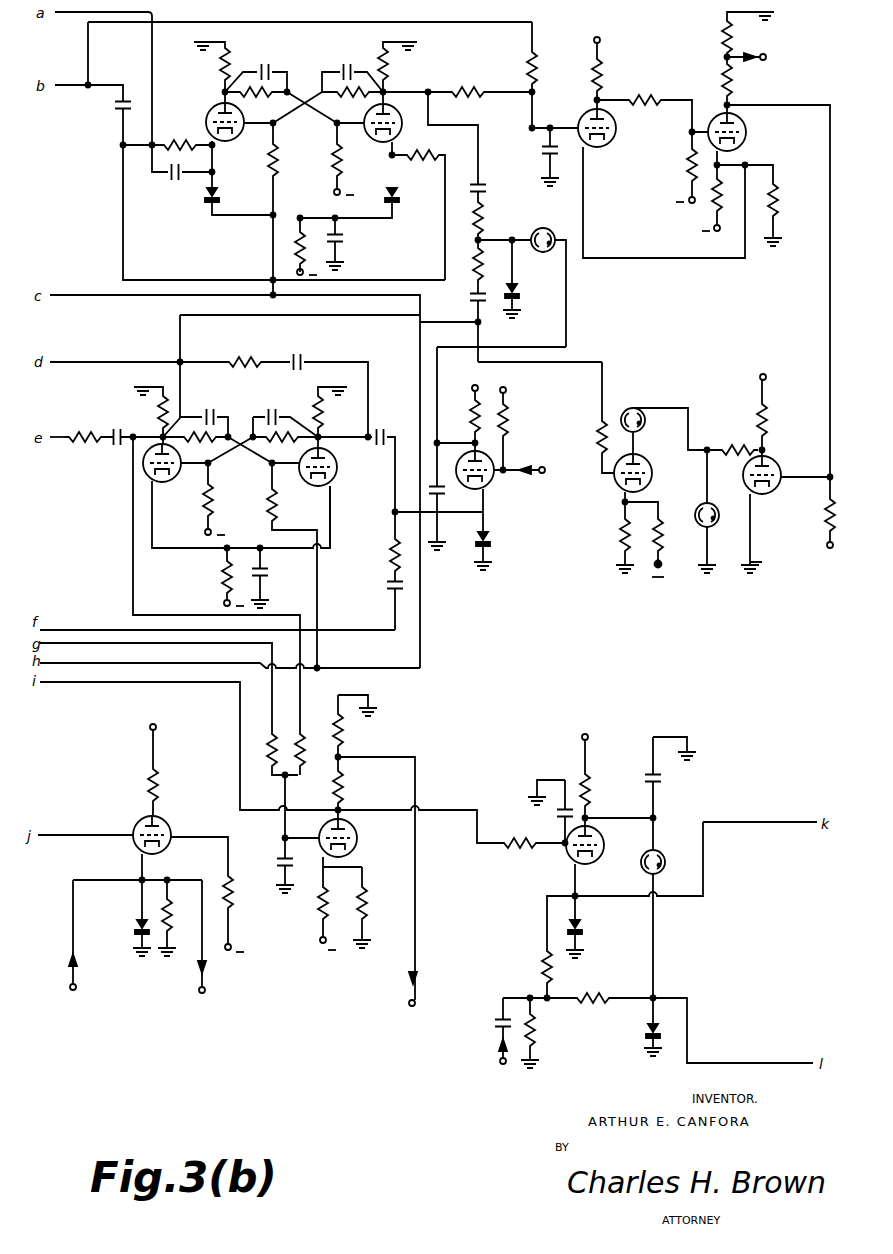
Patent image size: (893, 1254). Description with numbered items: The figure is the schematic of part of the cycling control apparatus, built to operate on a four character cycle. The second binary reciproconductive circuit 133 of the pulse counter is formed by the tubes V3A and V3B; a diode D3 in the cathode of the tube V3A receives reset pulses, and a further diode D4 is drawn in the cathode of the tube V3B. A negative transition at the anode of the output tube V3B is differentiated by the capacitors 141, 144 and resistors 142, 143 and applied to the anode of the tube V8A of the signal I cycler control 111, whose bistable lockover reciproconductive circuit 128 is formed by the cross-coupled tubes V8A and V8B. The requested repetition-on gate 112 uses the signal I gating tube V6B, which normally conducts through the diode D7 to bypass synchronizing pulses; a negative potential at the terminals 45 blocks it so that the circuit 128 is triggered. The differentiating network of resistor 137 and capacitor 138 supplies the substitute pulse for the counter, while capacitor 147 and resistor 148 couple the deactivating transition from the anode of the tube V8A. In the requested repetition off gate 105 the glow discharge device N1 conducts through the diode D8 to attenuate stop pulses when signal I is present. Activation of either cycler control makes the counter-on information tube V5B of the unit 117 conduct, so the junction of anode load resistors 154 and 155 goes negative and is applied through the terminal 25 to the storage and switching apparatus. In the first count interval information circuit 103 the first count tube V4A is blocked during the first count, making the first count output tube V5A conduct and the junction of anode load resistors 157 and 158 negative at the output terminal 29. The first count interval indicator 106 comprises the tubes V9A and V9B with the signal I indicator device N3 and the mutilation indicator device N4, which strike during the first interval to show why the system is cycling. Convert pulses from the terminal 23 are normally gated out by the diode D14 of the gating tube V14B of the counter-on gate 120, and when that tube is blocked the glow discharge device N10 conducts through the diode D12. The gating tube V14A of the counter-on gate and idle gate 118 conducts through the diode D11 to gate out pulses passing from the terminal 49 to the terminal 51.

The output terminal 29 is at (762, 54).
The input terminals 45 is at (545, 470).
The terminal 49 is at (76, 986).
The terminal 51 is at (206, 989).
The terminal 23 is at (500, 1060).
The terminal 25 is at (418, 1007).
The first count interval information circuit 103 is at (645, 55).
The requested repetition off gate 105 is at (552, 278).
The first count interval indicator 106 is at (690, 384).
The signal I cycler control 111 is at (257, 401).
The requested repetition-on gate 112 is at (502, 385).
The counter-on information unit 117 is at (412, 720).
The counter-on gate and idle gate 118 is at (124, 744).
The counter-on gate 120 is at (642, 736).
The bistable reciproconductive circuit 128 is at (256, 486).
The binary reciproconductive circuit 133 is at (315, 148).
The resistor 137 is at (238, 358).
The capacitor 138 is at (302, 360).
The capacitor 141 is at (483, 182).
The resistor 142 is at (482, 225).
The resistor 143 is at (478, 280).
The capacitor 144 is at (472, 298).
The capacitor 147 is at (114, 423).
The resistor 148 is at (93, 445).
The anode load resistor 154 is at (343, 788).
The anode load resistor 155 is at (345, 731).
The anode load resistor 157 is at (720, 78).
The anode load resistor 158 is at (720, 33).
The tube V3A is at (228, 136).
The output tube V3B is at (379, 138).
The first count tube V4A is at (602, 142).
The first count output tube V5A is at (742, 143).
The counter-on information tube V5B is at (357, 848).
The signal I gating tube V6B is at (494, 483).
The tube V8A is at (164, 478).
The tube V8B is at (305, 490).
The signal I indicating tube V9A is at (653, 481).
The indicator tube V9B is at (759, 493).
The gating tube V14A is at (172, 837).
The gating tube V14B is at (562, 868).
The glow discharge device N1 is at (558, 210).
The signal I indicator device N3 is at (628, 408).
The mutilation indicator device N4 is at (717, 506).
The glow discharge device N10 is at (662, 852).
The diode D3 is at (225, 194).
The diode D4 is at (406, 194).
The diode D7 is at (498, 540).
The diode D8 is at (518, 293).
The diode D11 is at (127, 933).
The diode D12 is at (630, 1030).
The diode D14 is at (593, 928).